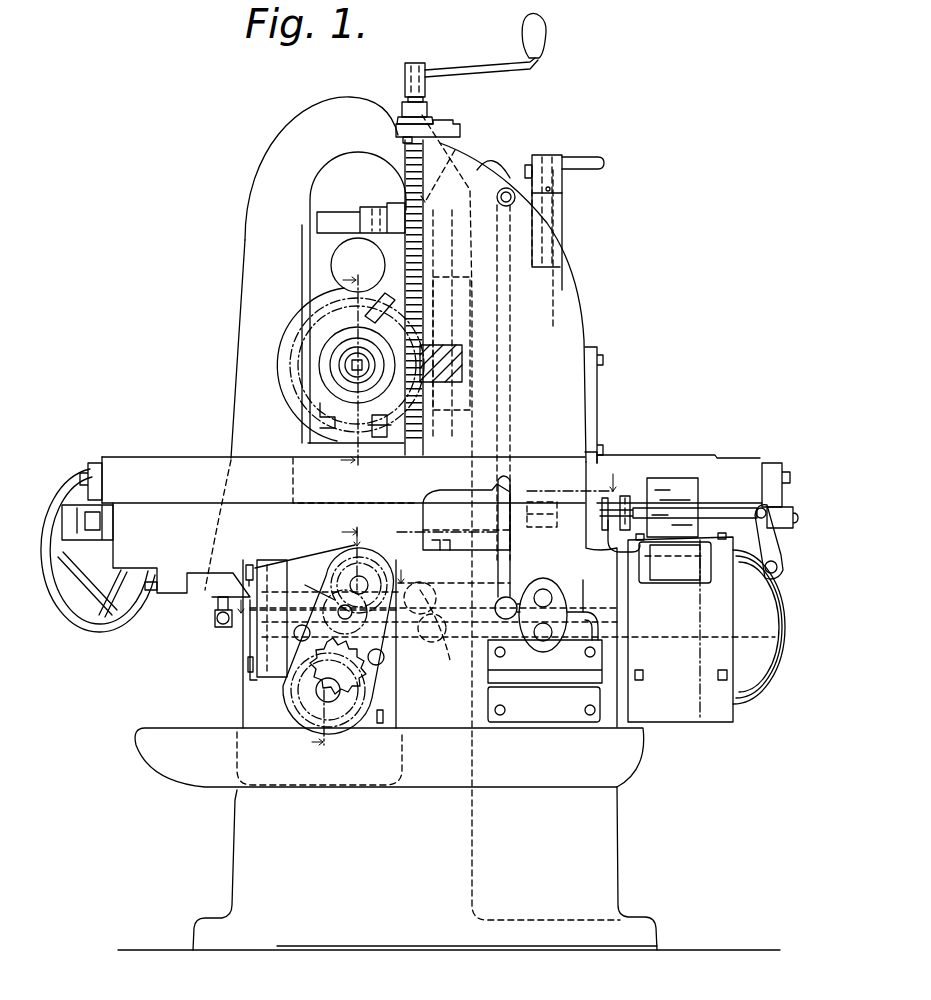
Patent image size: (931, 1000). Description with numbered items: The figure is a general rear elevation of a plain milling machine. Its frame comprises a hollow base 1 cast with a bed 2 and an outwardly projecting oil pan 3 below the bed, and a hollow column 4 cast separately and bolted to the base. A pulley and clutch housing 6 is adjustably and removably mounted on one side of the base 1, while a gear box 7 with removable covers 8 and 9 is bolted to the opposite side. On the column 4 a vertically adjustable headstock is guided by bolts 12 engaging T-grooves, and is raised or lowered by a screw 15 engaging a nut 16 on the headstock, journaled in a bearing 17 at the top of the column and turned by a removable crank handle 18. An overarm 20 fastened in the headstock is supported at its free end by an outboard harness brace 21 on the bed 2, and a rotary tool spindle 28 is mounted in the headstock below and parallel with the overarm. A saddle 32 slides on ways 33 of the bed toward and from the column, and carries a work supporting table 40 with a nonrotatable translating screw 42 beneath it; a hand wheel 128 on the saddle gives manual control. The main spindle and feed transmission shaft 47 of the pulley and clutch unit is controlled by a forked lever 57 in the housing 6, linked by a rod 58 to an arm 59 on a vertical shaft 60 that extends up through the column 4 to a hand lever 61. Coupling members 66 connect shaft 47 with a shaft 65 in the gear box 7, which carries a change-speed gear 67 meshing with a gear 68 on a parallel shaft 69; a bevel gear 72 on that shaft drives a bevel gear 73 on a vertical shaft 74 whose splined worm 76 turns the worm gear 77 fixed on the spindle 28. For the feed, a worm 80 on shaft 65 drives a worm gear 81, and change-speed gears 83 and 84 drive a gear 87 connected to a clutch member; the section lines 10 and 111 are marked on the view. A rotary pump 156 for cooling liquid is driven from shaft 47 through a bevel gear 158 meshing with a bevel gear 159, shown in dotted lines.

The hollow base 1 is at (408, 850).
The bed 2 is at (241, 688).
The oil pan 3 is at (389, 757).
The hollow column 4 is at (512, 427).
The pulley and clutch housing 6 is at (495, 638).
The gear box 7 is at (326, 601).
The removable cover 8 is at (252, 641).
The removable cover 9 is at (272, 709).
The section line 10- 10 is at (490, 508).
The bolts 12 is at (377, 203).
The screw 15 is at (424, 165).
The nut 16 is at (440, 176).
The bearing 17 is at (421, 127).
The crank handle 18 is at (478, 52).
The overarm 20 is at (342, 268).
The outboard harness brace 21 is at (354, 280).
The rotary tool spindle 28 is at (332, 363).
The saddle 32 is at (181, 565).
The ways 33 is at (246, 565).
The work supporting table 40 is at (206, 490).
The translating screw 42 is at (56, 517).
The main spindle and feed transmission shaft 47 is at (680, 640).
The forked lever 57 is at (783, 544).
The rod 58 is at (720, 507).
The arm 59 is at (548, 523).
The vertical shaft 60 is at (538, 437).
The hand lever 61 is at (580, 152).
The shaft 65 is at (455, 660).
The coupling members 66 is at (538, 651).
The change-speed gear 67 is at (247, 658).
The change-speed gear 68 is at (270, 608).
The parallel shaft 69 is at (300, 572).
The bevel gear 72 is at (518, 629).
The bevel gear 73 is at (467, 583).
The vertical shaft 74 is at (457, 470).
The worm 76 is at (461, 349).
The worm gear 77 is at (296, 335).
The worm 80 is at (316, 597).
The worm gear 81 is at (300, 716).
The change-speed gear 83 is at (351, 641).
The gear 84 is at (326, 666).
The gear 87 is at (349, 563).
The slot 111 is at (385, 305).
The hand wheel 128 is at (90, 626).
The rotary pump 156 is at (560, 595).
The bevel gear 158 is at (544, 704).
The bevel gear 159 is at (517, 627).